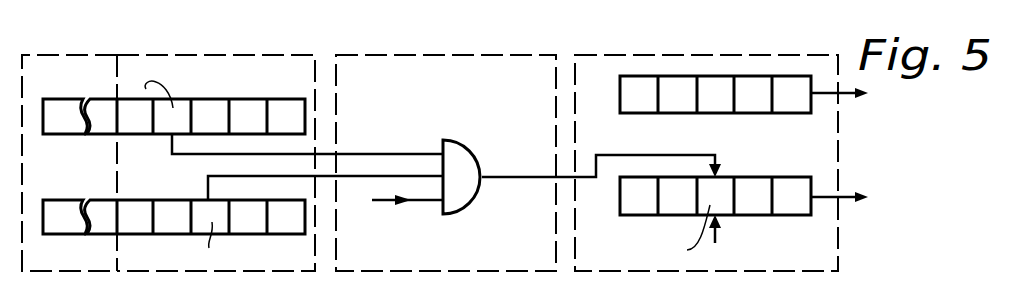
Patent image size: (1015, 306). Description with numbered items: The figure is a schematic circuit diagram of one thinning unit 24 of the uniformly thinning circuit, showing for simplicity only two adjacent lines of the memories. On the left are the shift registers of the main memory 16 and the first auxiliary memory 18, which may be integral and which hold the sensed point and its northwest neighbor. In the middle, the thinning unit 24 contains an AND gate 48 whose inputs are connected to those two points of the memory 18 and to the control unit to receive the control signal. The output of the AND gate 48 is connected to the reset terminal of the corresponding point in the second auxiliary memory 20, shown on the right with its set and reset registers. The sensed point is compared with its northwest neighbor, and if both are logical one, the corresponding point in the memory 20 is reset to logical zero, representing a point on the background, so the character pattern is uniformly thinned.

The main memory 16 is at (63, 258).
The first auxiliary memory 18 is at (222, 263).
The thinning unit 24 is at (446, 180).
The AND gate 48 is at (462, 193).
The second auxiliary memory 20 is at (712, 265).